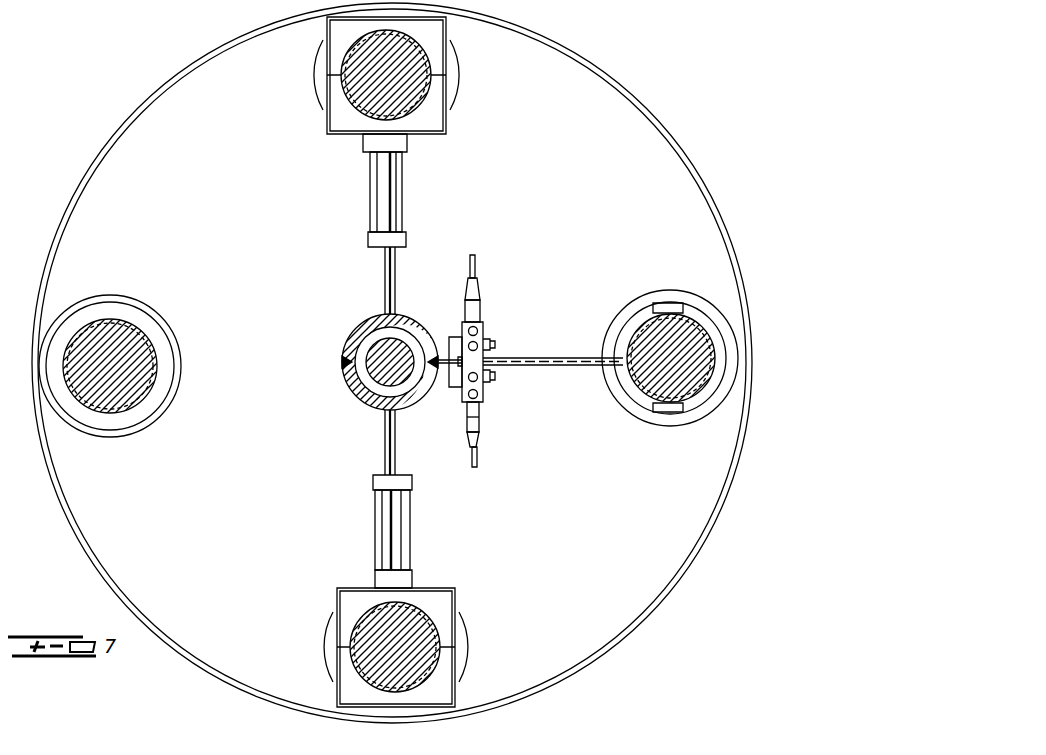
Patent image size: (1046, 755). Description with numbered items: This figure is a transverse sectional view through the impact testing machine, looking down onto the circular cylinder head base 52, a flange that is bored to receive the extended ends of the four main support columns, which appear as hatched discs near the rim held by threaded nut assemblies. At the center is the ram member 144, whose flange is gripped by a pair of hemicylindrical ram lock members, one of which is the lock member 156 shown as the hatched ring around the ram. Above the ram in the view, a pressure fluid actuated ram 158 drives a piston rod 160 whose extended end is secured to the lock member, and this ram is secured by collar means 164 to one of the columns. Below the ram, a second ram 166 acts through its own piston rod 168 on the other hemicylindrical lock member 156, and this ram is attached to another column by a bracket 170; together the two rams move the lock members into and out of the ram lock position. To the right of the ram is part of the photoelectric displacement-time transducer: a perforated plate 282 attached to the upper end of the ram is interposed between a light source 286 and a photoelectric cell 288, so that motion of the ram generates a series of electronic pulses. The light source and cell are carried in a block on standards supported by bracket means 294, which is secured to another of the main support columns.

The cylinder head base 52 is at (240, 207).
The ram member 144 is at (396, 350).
The hemicylindrical ram lock member 156 is at (368, 400).
The pressure fluid actuated ram 158 is at (401, 210).
The piston rod 160 is at (386, 292).
The collar means 164 is at (332, 30).
The ram 166 is at (388, 525).
The piston rod 168 is at (398, 440).
The bracket 170 is at (448, 620).
The perforated plate 282 is at (452, 358).
The light source 286 is at (478, 300).
The photoelectric cell 288 is at (481, 415).
The bracket means 294 is at (562, 355).